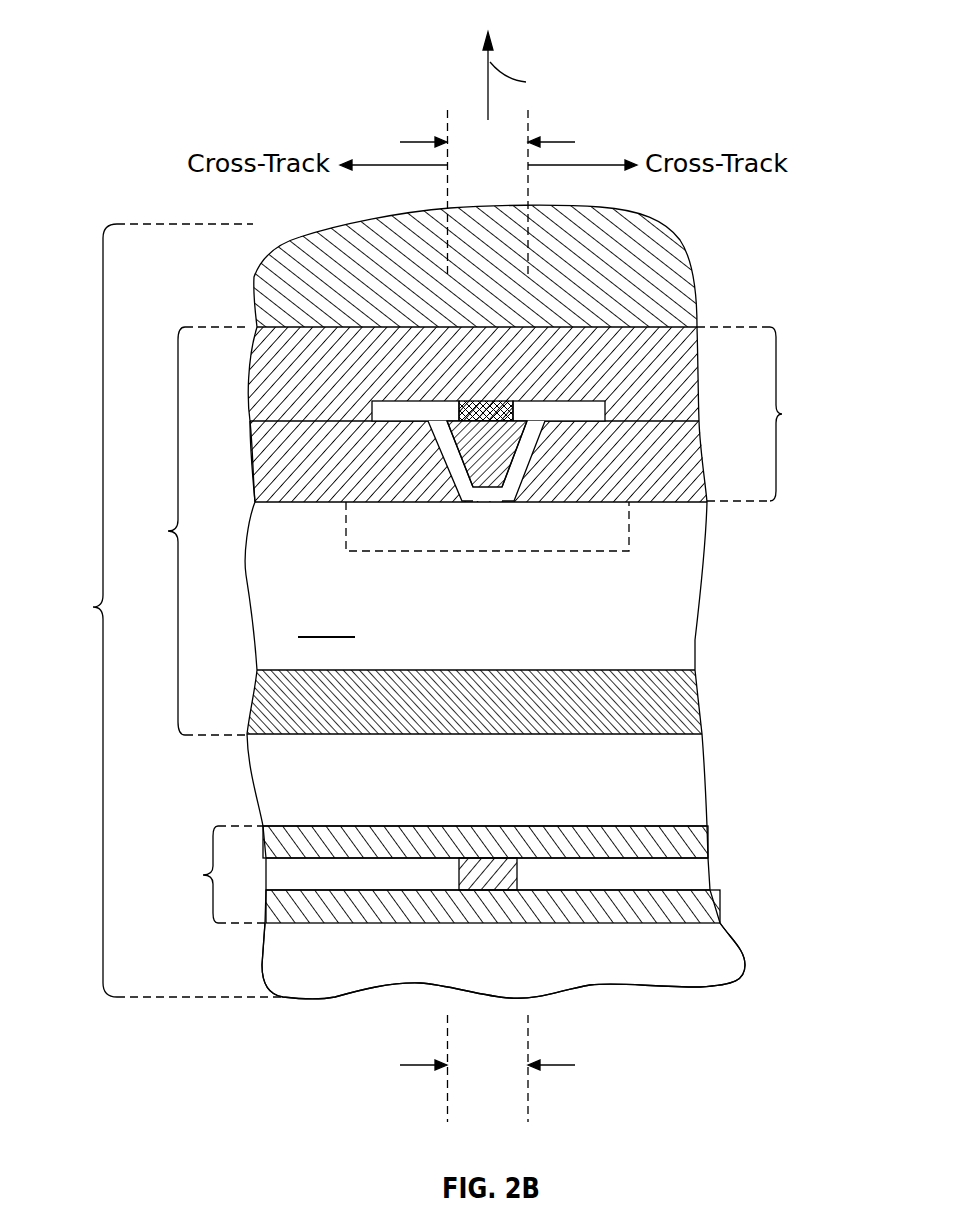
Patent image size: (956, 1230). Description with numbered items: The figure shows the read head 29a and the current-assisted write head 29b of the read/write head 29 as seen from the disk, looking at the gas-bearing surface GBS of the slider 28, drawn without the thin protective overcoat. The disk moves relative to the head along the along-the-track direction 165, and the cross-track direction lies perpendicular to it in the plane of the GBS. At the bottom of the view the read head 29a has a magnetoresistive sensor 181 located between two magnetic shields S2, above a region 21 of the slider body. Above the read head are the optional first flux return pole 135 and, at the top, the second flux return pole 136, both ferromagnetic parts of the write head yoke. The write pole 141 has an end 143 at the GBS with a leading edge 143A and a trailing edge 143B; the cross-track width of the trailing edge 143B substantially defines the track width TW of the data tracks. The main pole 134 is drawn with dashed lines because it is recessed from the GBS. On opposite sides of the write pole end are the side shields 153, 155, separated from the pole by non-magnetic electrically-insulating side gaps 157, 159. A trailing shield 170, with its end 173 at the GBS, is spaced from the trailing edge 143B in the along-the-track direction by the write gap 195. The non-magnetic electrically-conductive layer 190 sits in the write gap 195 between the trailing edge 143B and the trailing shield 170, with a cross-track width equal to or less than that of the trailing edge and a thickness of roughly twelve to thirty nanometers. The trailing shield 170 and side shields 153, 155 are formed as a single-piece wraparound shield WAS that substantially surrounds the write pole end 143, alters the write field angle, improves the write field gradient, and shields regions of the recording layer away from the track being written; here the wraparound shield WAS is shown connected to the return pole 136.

The along-the-track direction 165 is at (490, 50).
The second flux return pole 136 is at (675, 250).
The trailing magnetic shield 170 is at (570, 327).
The disk-facing end of trailing shield 173 is at (690, 365).
The side shield 153 is at (667, 458).
The side shield 155 is at (285, 468).
The side gap 159 is at (445, 436).
The write gap 195 is at (545, 400).
The non-magnetic electrically-conductive layer 190 is at (478, 400).
The write pole 141 is at (453, 456).
The trailing edge of write pole end 143B is at (527, 445).
The write pole end 143 is at (462, 502).
The leading edge of write pole end 143A is at (493, 502).
The side gap 157 is at (518, 502).
The main pole 134 is at (588, 541).
The read/write head 29 is at (166, 610).
The current-assisted write head 29b is at (184, 531).
The read head 29a is at (213, 874).
The first flux return pole 135 is at (684, 686).
The slider 28 is at (712, 757).
The magnetoresistive read element or sensor 181 is at (518, 866).
The substrate 21 is at (683, 924).
The magnetic shield S2 is at (697, 838).
The wraparound shield WAS is at (770, 414).
The gas-bearing surface GBS is at (326, 623).
The track-width TW is at (487, 616).